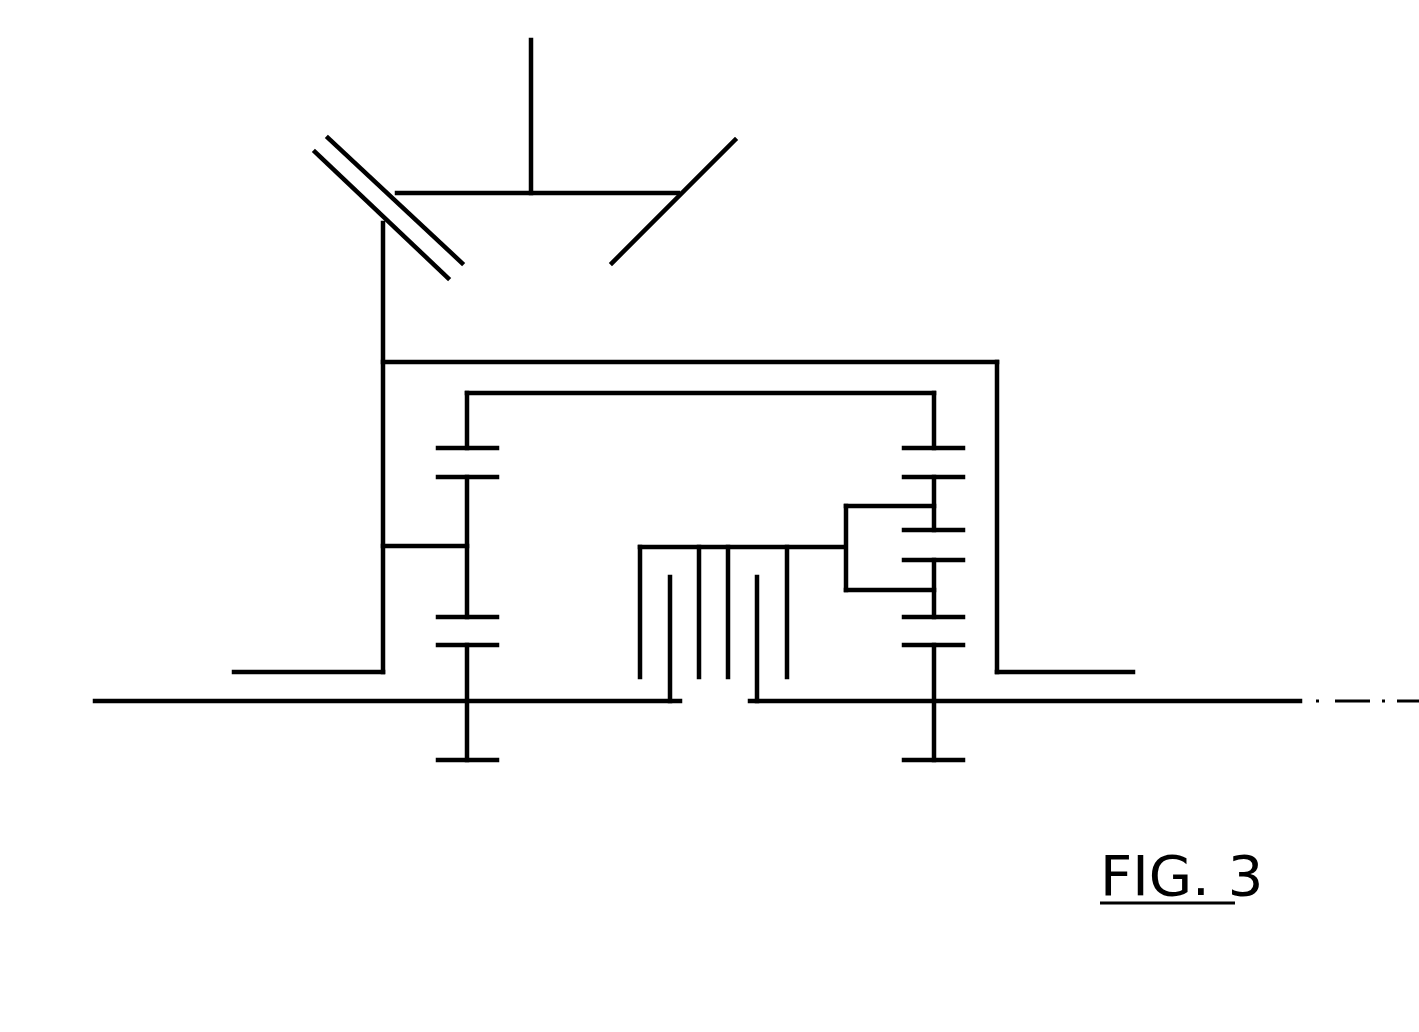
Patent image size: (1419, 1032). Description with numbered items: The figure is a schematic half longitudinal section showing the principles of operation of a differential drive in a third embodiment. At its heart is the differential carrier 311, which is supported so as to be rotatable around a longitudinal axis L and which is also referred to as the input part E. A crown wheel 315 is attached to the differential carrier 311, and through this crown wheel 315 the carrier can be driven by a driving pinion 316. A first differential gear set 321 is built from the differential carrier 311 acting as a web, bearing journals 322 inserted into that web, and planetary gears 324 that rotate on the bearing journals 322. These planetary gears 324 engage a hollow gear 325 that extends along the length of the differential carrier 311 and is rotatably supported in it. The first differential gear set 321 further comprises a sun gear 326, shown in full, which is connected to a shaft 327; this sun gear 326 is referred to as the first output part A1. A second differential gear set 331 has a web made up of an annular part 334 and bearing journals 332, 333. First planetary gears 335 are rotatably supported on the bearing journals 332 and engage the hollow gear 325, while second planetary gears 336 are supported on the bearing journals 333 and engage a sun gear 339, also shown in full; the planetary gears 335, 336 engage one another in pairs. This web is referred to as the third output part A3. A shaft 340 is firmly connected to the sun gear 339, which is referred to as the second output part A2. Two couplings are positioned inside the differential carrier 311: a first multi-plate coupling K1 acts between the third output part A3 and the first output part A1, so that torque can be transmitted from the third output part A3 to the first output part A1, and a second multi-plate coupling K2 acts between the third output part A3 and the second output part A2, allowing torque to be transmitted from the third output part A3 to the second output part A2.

The differential carrier 311 is at (570, 360).
The crown wheel 315 is at (363, 198).
The driving pinion 316 is at (573, 193).
The first differential gear set 321 is at (490, 357).
The bearing journals 322 is at (417, 540).
The planetary gears 324 is at (447, 473).
The hollow gear 325 is at (715, 390).
The sun gear 326 is at (443, 644).
The shaft 327 is at (162, 698).
The second differential gear set 331 is at (935, 340).
The bearing journals 332 is at (873, 503).
The bearing journals 333 is at (867, 588).
The annular part 334 is at (843, 538).
The first planetary gears 335 is at (950, 472).
The second planetary gears 336 is at (953, 557).
The sun gear 339 is at (953, 643).
The shaft 340 is at (1167, 698).
The input part E is at (692, 347).
The first output part A1 is at (457, 783).
The second output part A2 is at (930, 790).
The third output part A3 is at (830, 493).
The first multi-plate coupling K1 is at (663, 738).
The second multi-plate coupling K2 is at (768, 737).
The longitudinal axis L is at (1338, 700).